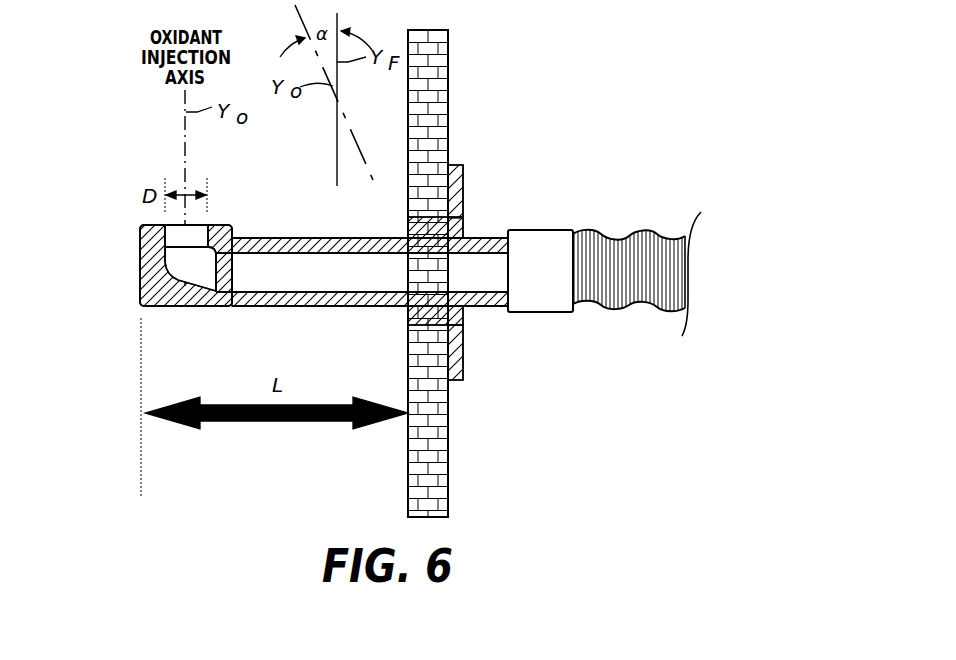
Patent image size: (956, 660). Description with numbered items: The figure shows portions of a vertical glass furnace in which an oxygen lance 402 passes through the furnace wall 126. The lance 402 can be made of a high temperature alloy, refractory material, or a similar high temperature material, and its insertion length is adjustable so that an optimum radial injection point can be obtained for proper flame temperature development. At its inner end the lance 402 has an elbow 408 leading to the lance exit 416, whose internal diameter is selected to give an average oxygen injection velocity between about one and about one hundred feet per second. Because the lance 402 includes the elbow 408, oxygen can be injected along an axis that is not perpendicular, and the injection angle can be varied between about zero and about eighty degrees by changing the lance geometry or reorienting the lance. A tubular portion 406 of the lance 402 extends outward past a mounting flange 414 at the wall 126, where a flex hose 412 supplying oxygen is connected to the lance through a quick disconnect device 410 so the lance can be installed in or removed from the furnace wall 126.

The furnace wall 126 is at (440, 128).
The oxygen lance 402 is at (362, 275).
The lance tube 406 is at (319, 246).
The elbow 408 is at (151, 252).
The quick disconnect device 410 is at (538, 302).
The flex hose 412 is at (622, 304).
The mounting flange 414 is at (454, 221).
The lance exit 416 is at (165, 225).